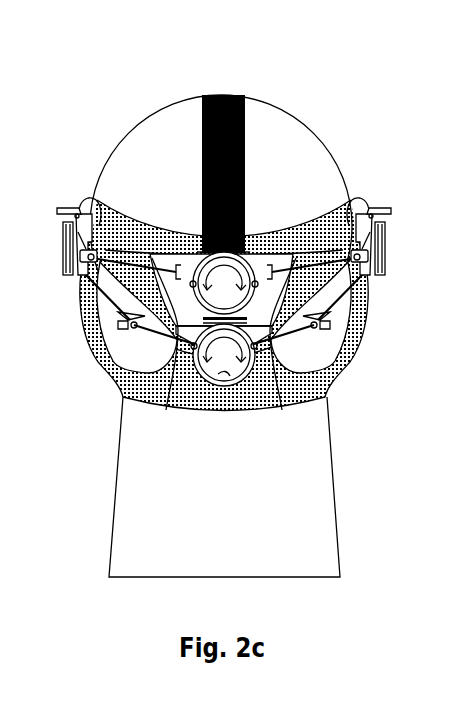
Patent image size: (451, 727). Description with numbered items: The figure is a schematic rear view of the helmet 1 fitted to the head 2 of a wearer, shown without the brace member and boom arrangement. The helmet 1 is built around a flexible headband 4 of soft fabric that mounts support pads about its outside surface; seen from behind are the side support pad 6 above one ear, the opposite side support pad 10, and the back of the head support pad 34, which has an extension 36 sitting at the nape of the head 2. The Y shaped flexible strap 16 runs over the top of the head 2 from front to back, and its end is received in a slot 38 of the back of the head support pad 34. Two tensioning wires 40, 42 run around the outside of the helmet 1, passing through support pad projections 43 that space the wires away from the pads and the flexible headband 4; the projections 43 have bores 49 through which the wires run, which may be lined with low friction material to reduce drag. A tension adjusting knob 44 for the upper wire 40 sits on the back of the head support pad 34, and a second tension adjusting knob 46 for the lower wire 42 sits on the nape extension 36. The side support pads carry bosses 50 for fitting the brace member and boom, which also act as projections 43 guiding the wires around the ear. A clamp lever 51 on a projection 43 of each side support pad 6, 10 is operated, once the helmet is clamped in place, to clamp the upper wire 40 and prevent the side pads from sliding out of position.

The helmet 1 is at (376, 150).
The head 2 is at (237, 558).
The flexible headband 4 is at (107, 200).
The side support pad 6 is at (145, 355).
The forehead support pad 10 is at (308, 357).
The Y shaped flexible strap 16 is at (226, 94).
The back of the head support pad 34 is at (175, 262).
The extension 36 is at (281, 413).
The slot 38 is at (197, 252).
The upper tensioning wire 40 is at (286, 260).
The lower tensioning wire 42 is at (167, 407).
The support pad projections 43 is at (170, 268).
The tension adjusting knob 44 is at (260, 210).
The second tension adjusting knob 46 is at (234, 386).
The bores 49 is at (128, 335).
The bosses 50 is at (57, 243).
The clamp lever 51 is at (60, 208).